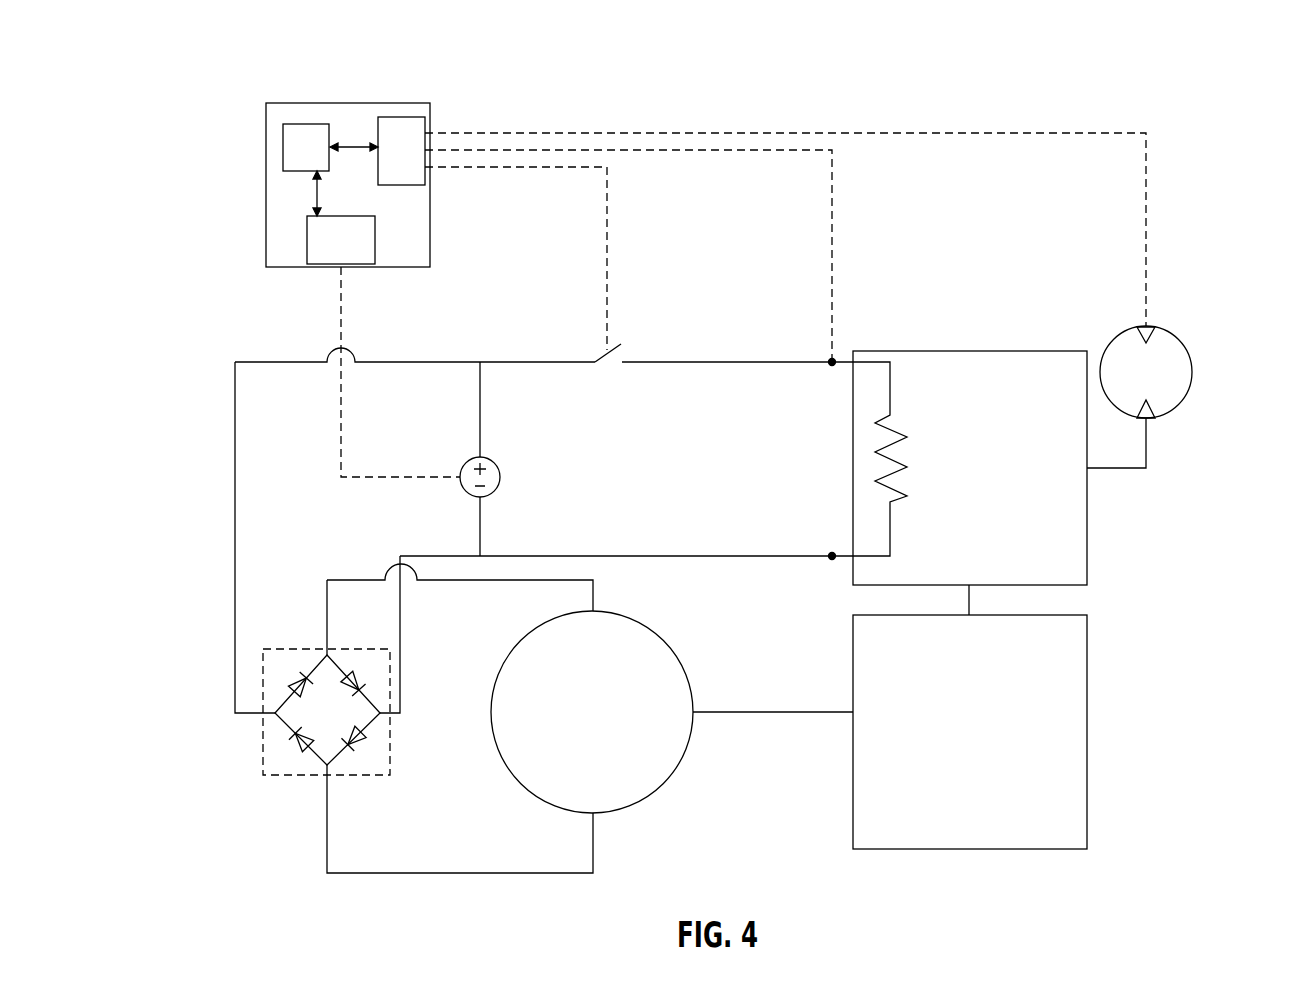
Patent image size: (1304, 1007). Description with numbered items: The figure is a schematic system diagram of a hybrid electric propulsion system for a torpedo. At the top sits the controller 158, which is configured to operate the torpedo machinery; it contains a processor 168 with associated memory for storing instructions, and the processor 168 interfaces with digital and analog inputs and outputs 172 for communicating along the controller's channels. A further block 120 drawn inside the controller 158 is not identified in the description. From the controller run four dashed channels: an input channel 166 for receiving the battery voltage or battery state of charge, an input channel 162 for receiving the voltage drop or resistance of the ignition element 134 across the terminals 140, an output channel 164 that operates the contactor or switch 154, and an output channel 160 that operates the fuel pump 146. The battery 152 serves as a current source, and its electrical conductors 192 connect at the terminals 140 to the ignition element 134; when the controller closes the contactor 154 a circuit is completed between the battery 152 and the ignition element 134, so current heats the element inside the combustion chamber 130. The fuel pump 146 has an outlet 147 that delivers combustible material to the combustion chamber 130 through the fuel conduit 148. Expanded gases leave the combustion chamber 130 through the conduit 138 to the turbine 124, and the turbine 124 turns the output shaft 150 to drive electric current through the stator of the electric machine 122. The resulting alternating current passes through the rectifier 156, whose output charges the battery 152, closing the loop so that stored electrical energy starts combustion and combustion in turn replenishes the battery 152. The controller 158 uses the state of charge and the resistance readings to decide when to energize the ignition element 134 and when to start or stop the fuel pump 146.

The controller 158 is at (354, 181).
The processor 168 is at (282, 148).
The digital and analog inputs and outputs 172 is at (425, 127).
The memory 120 is at (360, 267).
The input channel for battery state of charge 166 is at (340, 315).
The output channel 164 is at (508, 170).
The input channel for resistance 162 is at (703, 150).
The output channel 160 is at (762, 133).
The contactor 154 is at (603, 355).
The battery 152 is at (502, 478).
The electrical conductors 192 is at (713, 362).
The terminals 140 is at (832, 367).
The ignition element 134 is at (898, 447).
The combustion chamber 130 is at (1092, 537).
The fuel pump 146 is at (1182, 331).
The outlet 147 is at (1153, 403).
The fuel conduit 148 is at (1147, 447).
The conduit 138 is at (970, 588).
The turbine 124 is at (1092, 716).
The output shaft 150 is at (755, 713).
The electric machine 122 is at (640, 802).
The rectifier 156 is at (256, 746).